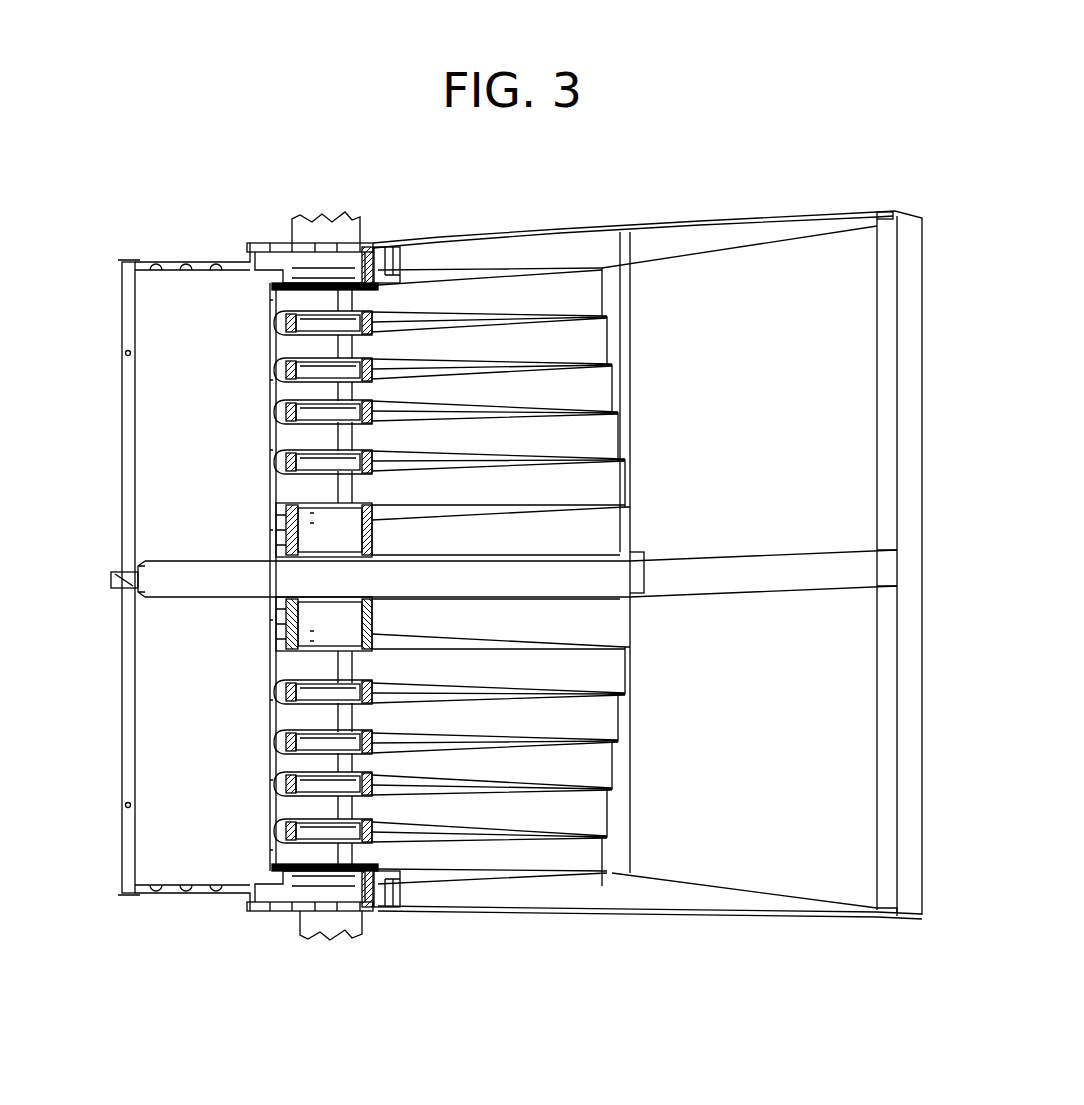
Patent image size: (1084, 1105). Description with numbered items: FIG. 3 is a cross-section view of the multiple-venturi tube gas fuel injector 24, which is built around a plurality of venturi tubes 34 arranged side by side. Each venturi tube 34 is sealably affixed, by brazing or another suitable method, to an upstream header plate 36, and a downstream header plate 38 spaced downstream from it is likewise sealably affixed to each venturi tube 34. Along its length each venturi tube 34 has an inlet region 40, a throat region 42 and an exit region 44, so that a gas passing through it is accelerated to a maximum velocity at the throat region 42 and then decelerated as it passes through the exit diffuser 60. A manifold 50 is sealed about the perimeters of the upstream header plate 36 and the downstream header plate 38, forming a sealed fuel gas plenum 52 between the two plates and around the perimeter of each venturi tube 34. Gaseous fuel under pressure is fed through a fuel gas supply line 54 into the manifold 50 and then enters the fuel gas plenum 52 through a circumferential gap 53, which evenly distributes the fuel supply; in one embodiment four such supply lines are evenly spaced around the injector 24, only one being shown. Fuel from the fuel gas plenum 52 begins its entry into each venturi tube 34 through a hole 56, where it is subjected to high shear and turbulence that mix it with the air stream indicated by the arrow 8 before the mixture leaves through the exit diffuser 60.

The airflow direction 8 is at (95, 437).
The multiple-venturi tube gas fuel injector 24 is at (107, 918).
The venturi tube 34 is at (440, 804).
The upstream header plate 36 is at (278, 831).
The downstream header plate 38 is at (356, 845).
The inlet region 40 is at (285, 494).
The throat region 42 is at (292, 444).
The exit region 44 is at (600, 439).
The manifold 50 is at (345, 258).
The fuel gas plenum 52 is at (313, 829).
The circumferential gap 53 is at (375, 278).
The fuel gas supply line 54 is at (320, 234).
The hole 56 is at (280, 347).
The exit diffuser 60 is at (776, 244).